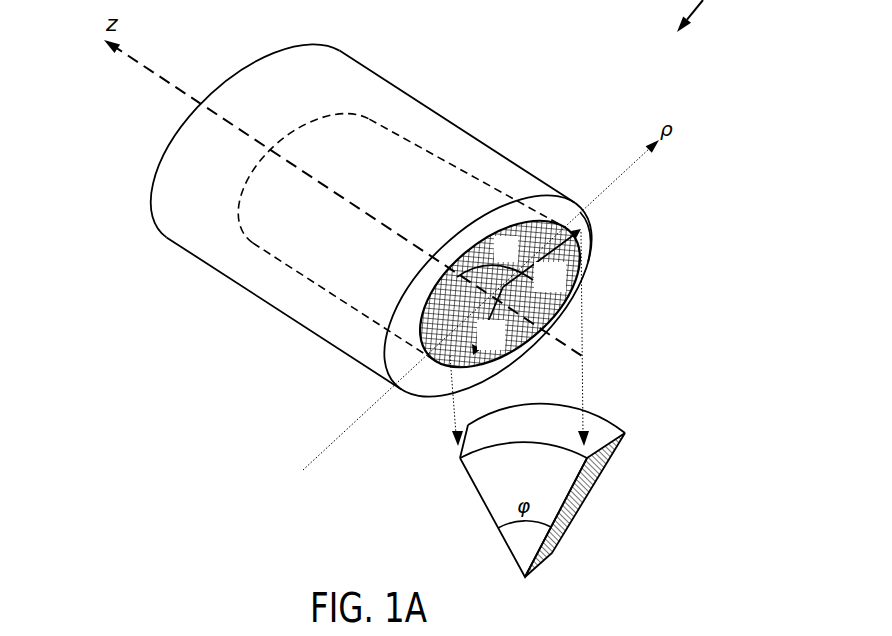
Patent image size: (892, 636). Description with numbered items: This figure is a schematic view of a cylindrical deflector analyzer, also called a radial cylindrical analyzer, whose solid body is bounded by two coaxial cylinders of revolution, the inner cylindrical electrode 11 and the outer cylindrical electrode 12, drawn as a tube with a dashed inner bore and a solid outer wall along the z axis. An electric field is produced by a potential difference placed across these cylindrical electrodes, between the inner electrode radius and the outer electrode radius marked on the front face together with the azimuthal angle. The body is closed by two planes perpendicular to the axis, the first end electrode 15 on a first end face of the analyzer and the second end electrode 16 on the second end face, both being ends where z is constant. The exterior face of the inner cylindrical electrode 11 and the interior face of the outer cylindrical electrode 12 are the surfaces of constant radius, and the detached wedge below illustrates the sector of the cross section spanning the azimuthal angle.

The inner cylindrical electrode 11 is at (322, 283).
The outer cylindrical electrode 12 is at (440, 113).
The first end electrode 15 is at (588, 260).
The second end electrode 16 is at (170, 131).